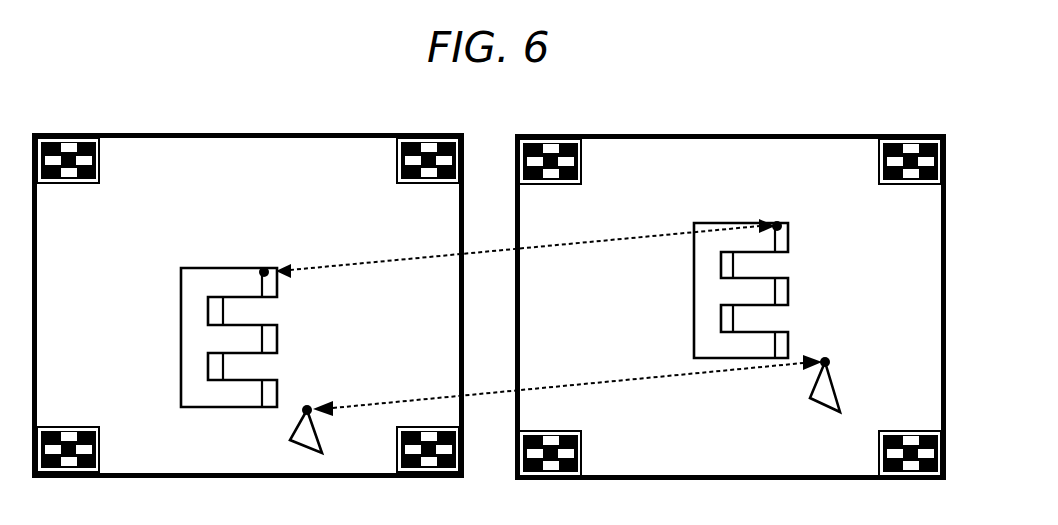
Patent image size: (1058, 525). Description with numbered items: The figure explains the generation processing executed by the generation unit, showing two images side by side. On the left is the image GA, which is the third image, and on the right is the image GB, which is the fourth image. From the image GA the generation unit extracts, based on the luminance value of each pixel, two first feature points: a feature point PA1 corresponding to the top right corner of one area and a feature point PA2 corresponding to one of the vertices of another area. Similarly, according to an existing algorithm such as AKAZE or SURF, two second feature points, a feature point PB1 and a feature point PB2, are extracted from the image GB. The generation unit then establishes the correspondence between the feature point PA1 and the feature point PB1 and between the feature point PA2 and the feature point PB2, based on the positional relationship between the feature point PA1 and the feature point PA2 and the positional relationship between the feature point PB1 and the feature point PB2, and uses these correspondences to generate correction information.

The image GA is at (215, 133).
The image GB is at (713, 134).
The feature point PA1 is at (268, 271).
The feature point PA2 is at (309, 409).
The feature point PB1 is at (779, 226).
The feature point PB2 is at (827, 362).